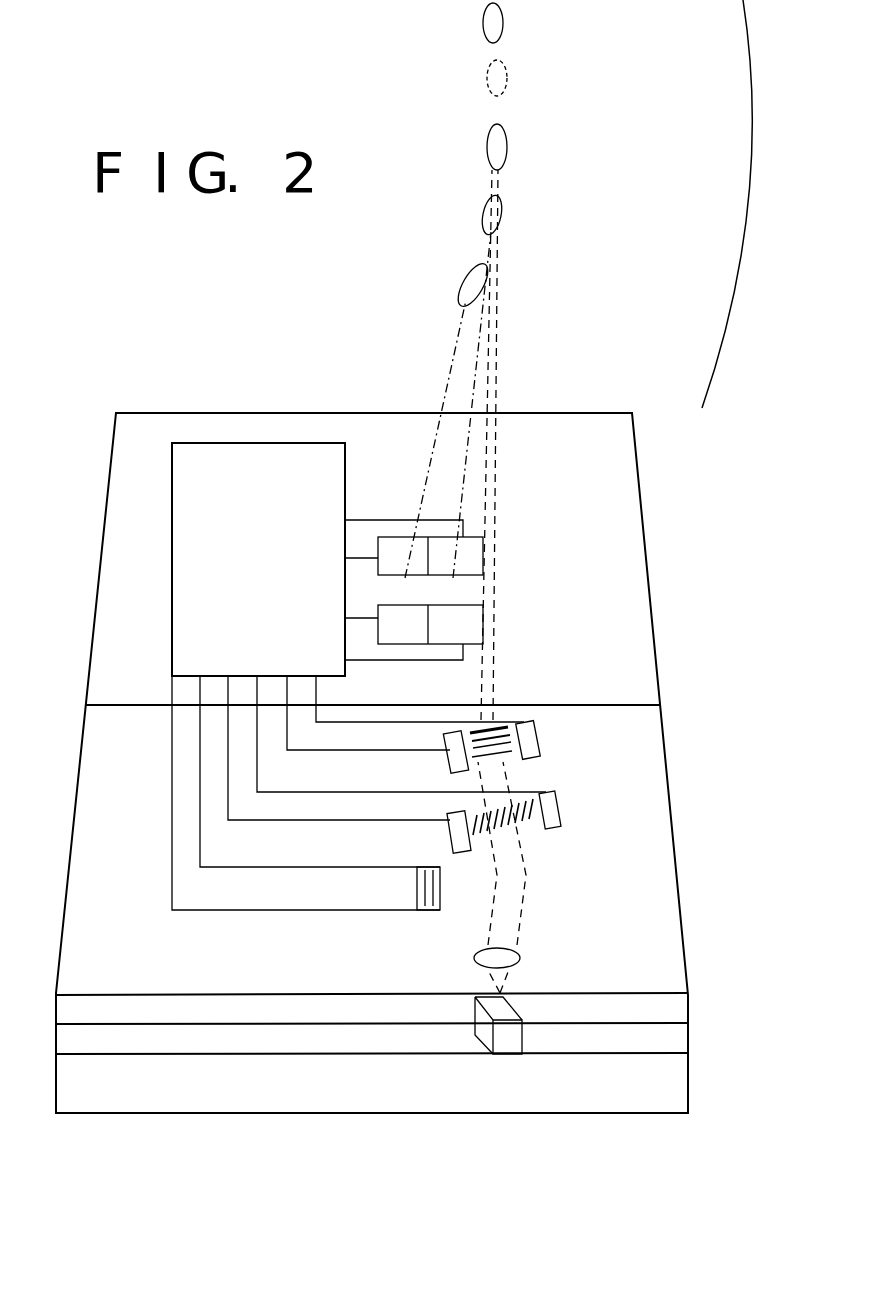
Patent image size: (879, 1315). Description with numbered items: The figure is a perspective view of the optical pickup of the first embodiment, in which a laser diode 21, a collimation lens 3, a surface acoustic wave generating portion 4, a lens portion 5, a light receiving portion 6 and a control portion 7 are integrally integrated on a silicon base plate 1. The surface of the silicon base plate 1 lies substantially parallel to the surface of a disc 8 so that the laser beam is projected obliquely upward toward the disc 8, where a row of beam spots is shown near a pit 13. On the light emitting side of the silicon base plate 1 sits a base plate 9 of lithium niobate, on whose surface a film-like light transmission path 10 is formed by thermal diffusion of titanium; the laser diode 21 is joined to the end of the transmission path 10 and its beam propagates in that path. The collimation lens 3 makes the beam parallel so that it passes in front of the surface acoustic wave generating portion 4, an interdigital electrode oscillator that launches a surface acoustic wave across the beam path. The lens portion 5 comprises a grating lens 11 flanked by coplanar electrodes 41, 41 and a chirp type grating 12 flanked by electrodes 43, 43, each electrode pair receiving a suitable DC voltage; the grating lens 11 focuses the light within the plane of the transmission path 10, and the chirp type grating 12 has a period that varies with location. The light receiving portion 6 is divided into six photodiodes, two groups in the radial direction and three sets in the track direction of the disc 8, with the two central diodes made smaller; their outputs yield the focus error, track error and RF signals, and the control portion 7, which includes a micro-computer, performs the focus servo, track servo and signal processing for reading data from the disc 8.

The silicon base plate 1 is at (589, 1105).
The collimation lens 3 is at (520, 958).
The surface acoustic wave generating portion 4 is at (440, 890).
The lens portion 5 is at (548, 793).
The light receiving portion 6 is at (483, 572).
The control portion 7 is at (345, 465).
The disc 8 is at (716, 266).
The base plate of LiNbO3 9 is at (675, 1044).
The light transmission path 10 is at (680, 1012).
The grating lens 11 is at (523, 832).
The chirp type grating 12 is at (522, 730).
The pit 13 is at (503, 30).
The laser diode 21 is at (508, 1043).
The electrodes 41 is at (450, 833).
The electrodes 43 is at (451, 754).